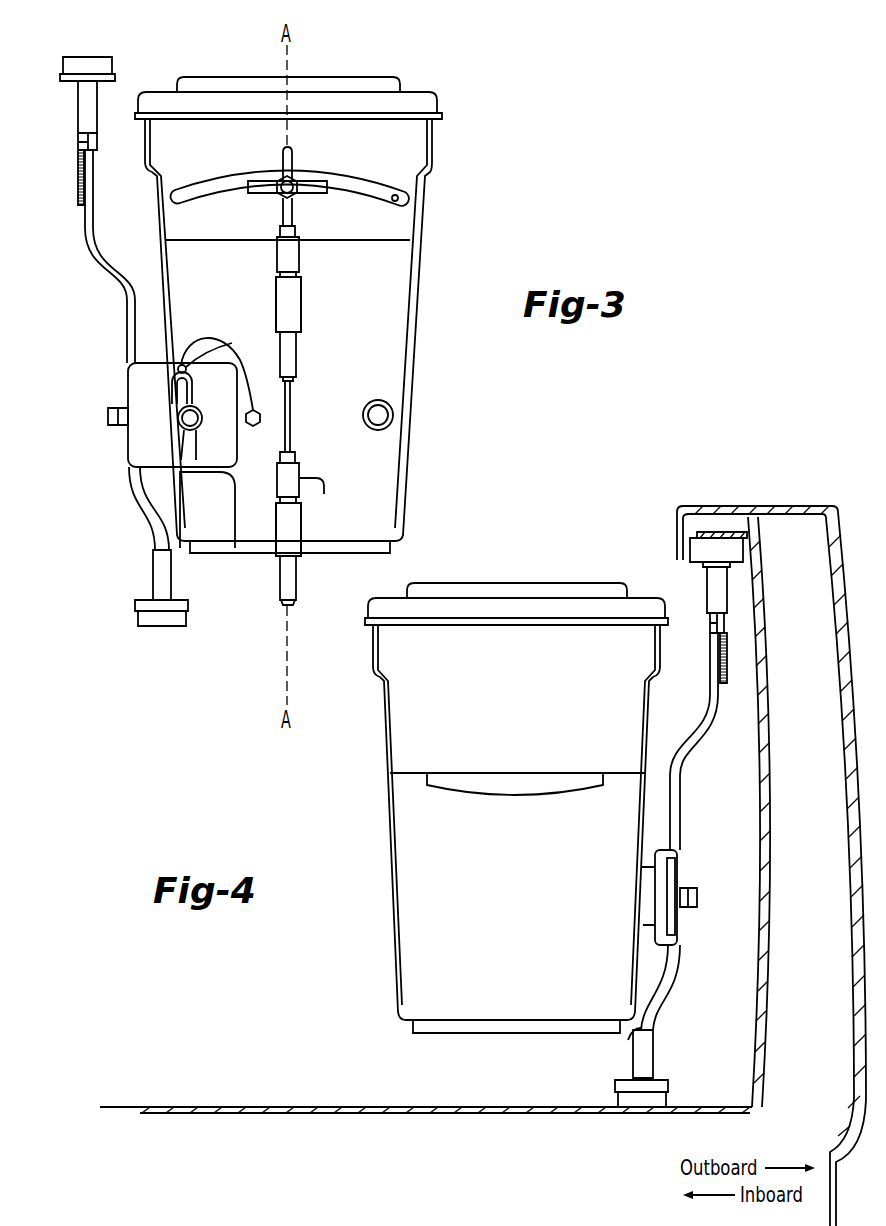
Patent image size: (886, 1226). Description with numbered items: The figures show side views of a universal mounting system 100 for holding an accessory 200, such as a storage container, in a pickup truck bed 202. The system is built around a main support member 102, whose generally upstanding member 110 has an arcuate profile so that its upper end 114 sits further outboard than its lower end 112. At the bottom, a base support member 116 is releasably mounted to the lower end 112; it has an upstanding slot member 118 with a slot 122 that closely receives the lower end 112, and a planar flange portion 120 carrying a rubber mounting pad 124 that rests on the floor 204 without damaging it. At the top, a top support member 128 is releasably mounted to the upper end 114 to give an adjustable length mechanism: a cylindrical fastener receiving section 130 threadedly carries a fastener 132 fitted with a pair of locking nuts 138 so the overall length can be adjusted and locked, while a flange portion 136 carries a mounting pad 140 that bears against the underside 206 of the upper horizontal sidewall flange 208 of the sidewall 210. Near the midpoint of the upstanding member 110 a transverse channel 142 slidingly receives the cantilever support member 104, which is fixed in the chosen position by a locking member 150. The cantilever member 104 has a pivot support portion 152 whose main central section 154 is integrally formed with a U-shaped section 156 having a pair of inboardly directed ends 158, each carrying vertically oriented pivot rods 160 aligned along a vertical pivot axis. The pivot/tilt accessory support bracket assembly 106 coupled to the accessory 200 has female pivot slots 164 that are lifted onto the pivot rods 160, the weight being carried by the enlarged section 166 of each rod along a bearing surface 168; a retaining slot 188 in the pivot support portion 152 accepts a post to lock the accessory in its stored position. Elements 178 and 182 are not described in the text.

In FIG. 3, the universal mounting system 100 is at (538, 185).
In FIG. 4, the universal mounting system 100 is at (345, 865).
In FIG. 3, the main support member 102 is at (92, 258).
In FIG. 4, the main support member 102 is at (682, 803).
In FIG. 3, the cantilever support member 104 is at (125, 388).
In FIG. 4, the cantilever support member 104 is at (672, 882).
In FIG. 3, the pivot/tilt accessory support bracket assembly 106 is at (412, 226).
In FIG. 3, the upstanding member 110 is at (127, 330).
In FIG. 4, the upstanding member 110 is at (700, 757).
In FIG. 4, the lower end 112 is at (660, 1020).
In FIG. 3, the upper end 114 is at (93, 172).
In FIG. 4, the upper end 114 is at (712, 660).
In FIG. 3, the base support member 116 is at (138, 597).
In FIG. 4, the base support member 116 is at (658, 1053).
In FIG. 4, the upstanding slot member 118 is at (633, 1063).
In FIG. 4, the flange portion 120 is at (618, 1085).
In FIG. 4, the slot 122 is at (633, 1033).
In FIG. 3, the mounting pad 124 is at (137, 612).
In FIG. 4, the mounting pad 124 is at (670, 1100).
In FIG. 3, the top support member 128 is at (75, 98).
In FIG. 4, the top support member 128 is at (710, 607).
In FIG. 3, the fastener receiving section 130 is at (92, 106).
In FIG. 4, the fastener receiving section 130 is at (707, 590).
In FIG. 4, the fastener 132 is at (728, 678).
In FIG. 4, the flange portion 136 is at (690, 562).
In FIG. 3, the locking nuts 138 is at (80, 148).
In FIG. 4, the mounting pad 140 is at (690, 547).
In FIG. 4, the transverse channel 142 is at (675, 845).
In FIG. 4, the locking member 150 is at (697, 900).
In FIG. 3, the pivot support portion 152 is at (153, 470).
In FIG. 3, the main central section 154 is at (145, 453).
In FIG. 3, the U-shaped section 156 is at (263, 550).
In FIG. 3, the inboardly directed ends 158 is at (303, 305).
In FIG. 3, the pivot rods 160 is at (297, 231).
In FIG. 3, the female pivot slots 164 is at (300, 257).
In FIG. 3, the enlarged section 166 is at (287, 292).
In FIG. 3, the bearing surface 168 is at (300, 275).
In FIG. 3, the handle 178 is at (397, 200).
In FIG. 3, the valve rod 182 is at (293, 155).
In FIG. 3, the retaining slot 188 is at (203, 418).
In FIG. 3, the accessory 200 is at (445, 92).
In FIG. 4, the accessory 200 is at (380, 729).
In FIG. 4, the pickup truck bed 202 is at (277, 1028).
In FIG. 4, the floor 204 is at (352, 1105).
In FIG. 4, the underside 206 is at (742, 545).
In FIG. 4, the upper horizontal sidewall flange 208 is at (758, 506).
In FIG. 4, the sidewall 210 is at (757, 965).